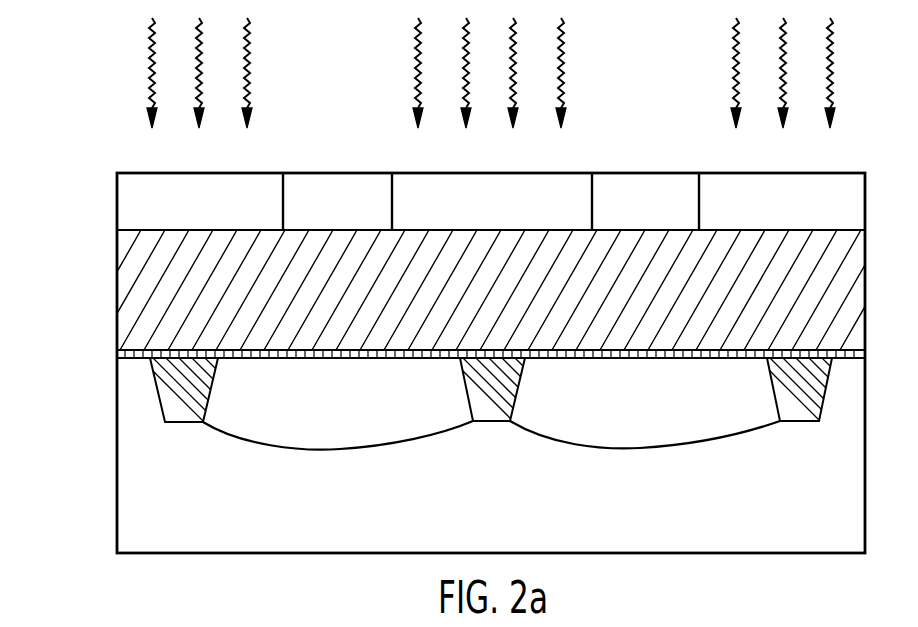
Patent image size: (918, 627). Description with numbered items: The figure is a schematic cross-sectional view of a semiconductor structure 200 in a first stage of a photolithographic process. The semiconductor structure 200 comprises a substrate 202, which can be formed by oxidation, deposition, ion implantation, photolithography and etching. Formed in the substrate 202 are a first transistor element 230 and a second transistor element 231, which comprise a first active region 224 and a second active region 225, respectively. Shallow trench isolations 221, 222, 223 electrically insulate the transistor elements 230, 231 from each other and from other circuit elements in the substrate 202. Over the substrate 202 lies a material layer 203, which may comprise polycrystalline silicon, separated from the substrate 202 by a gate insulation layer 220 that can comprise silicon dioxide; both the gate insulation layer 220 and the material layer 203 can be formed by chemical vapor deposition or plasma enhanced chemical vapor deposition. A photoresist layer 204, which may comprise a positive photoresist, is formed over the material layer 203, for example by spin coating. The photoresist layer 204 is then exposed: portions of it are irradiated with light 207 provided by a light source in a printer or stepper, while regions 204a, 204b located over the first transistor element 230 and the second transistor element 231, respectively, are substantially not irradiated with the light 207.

The semiconductor structure 200 is at (99, 138).
The substrate 202 is at (122, 532).
The material layer 203 is at (122, 282).
The photoresist layer 204 is at (122, 205).
The region 204a is at (350, 172).
The region 204b is at (652, 172).
The light 207 is at (124, 63).
The gate insulation layer 220 is at (120, 352).
The shallow trench isolation 221 is at (173, 424).
The shallow trench isolation 222 is at (482, 423).
The shallow trench isolation 223 is at (790, 423).
The first active region 224 is at (313, 450).
The second active region 225 is at (620, 450).
The first transistor element 230 is at (243, 451).
The second transistor element 231 is at (551, 451).